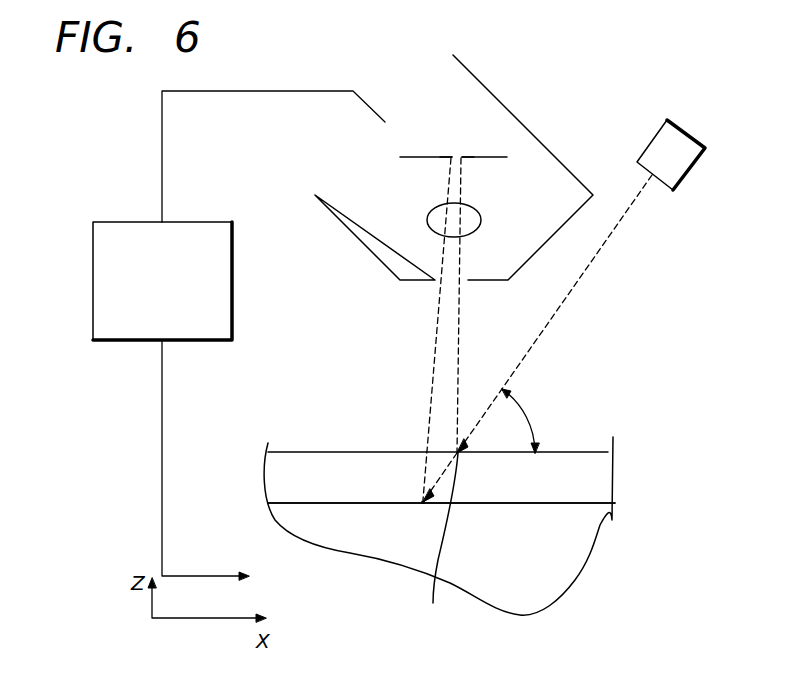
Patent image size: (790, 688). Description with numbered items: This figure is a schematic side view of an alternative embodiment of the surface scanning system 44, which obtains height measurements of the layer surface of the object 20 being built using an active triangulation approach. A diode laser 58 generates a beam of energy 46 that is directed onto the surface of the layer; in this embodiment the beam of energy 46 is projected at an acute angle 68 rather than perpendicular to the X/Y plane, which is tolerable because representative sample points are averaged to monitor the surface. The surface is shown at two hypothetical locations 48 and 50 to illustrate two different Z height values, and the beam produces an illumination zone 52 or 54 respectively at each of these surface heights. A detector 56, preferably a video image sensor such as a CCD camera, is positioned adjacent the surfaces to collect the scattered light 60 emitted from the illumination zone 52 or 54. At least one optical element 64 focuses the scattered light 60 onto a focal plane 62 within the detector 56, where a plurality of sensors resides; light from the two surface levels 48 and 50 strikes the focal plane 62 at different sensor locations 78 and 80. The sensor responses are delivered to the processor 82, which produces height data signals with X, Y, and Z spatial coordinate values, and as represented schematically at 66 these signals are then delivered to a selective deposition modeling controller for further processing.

The object 20 is at (565, 554).
The surface scanning system 44 is at (672, 308).
The beam of energy 46 is at (573, 285).
The surface location 48 is at (598, 452).
The surface location 50 is at (603, 503).
The illumination zone 52 is at (439, 544).
The illumination zone 54 is at (423, 502).
The detector 56 is at (498, 100).
The diode laser 58 is at (660, 167).
The scattered light 60 is at (457, 417).
The focal plane 62 is at (413, 157).
The optical element 64 is at (427, 222).
The height data signal delivery 66 is at (162, 458).
The acute angle 68 is at (528, 418).
The sensor location 78 is at (452, 158).
The sensor location 80 is at (462, 158).
The processor 82 is at (177, 294).